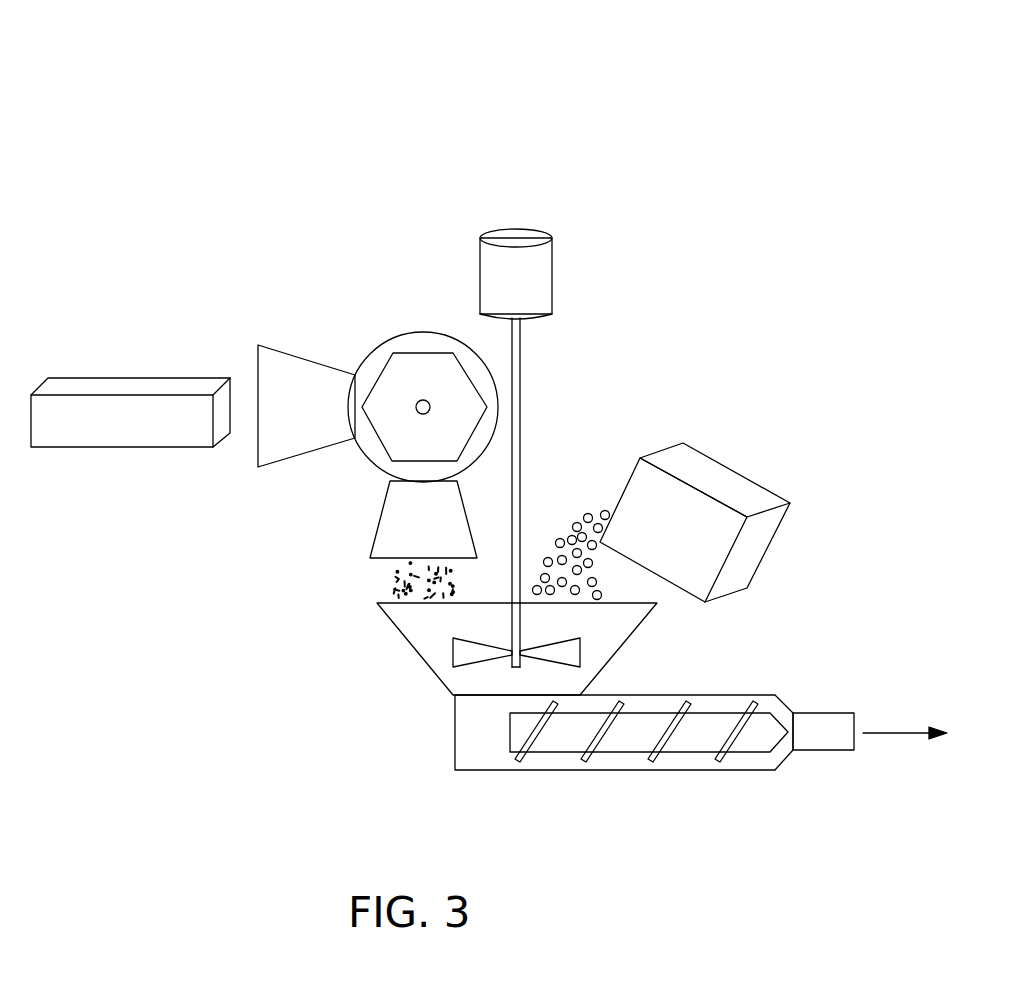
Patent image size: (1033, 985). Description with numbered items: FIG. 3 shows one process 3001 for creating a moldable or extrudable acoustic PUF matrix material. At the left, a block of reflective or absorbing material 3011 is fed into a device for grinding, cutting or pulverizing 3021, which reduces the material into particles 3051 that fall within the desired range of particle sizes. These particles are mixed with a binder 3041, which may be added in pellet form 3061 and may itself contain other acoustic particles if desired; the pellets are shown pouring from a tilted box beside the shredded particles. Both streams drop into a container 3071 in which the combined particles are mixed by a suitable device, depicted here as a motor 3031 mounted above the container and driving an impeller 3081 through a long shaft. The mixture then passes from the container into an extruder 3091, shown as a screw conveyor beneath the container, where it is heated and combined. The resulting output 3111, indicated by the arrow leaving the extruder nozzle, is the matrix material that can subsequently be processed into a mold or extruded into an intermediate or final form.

The process 3001 is at (101, 76).
The reflective or absorbing material 3011 is at (105, 447).
The grinding, cutting or pulverizing 3021 is at (338, 341).
The motor 3031 is at (518, 228).
The binder 3041 is at (730, 472).
The particles 3051 is at (370, 583).
The pellet form 3061 is at (570, 493).
The container 3071 is at (388, 617).
The impeller 3081 is at (453, 645).
The extruder 3091 is at (627, 752).
The output 3111 is at (890, 732).